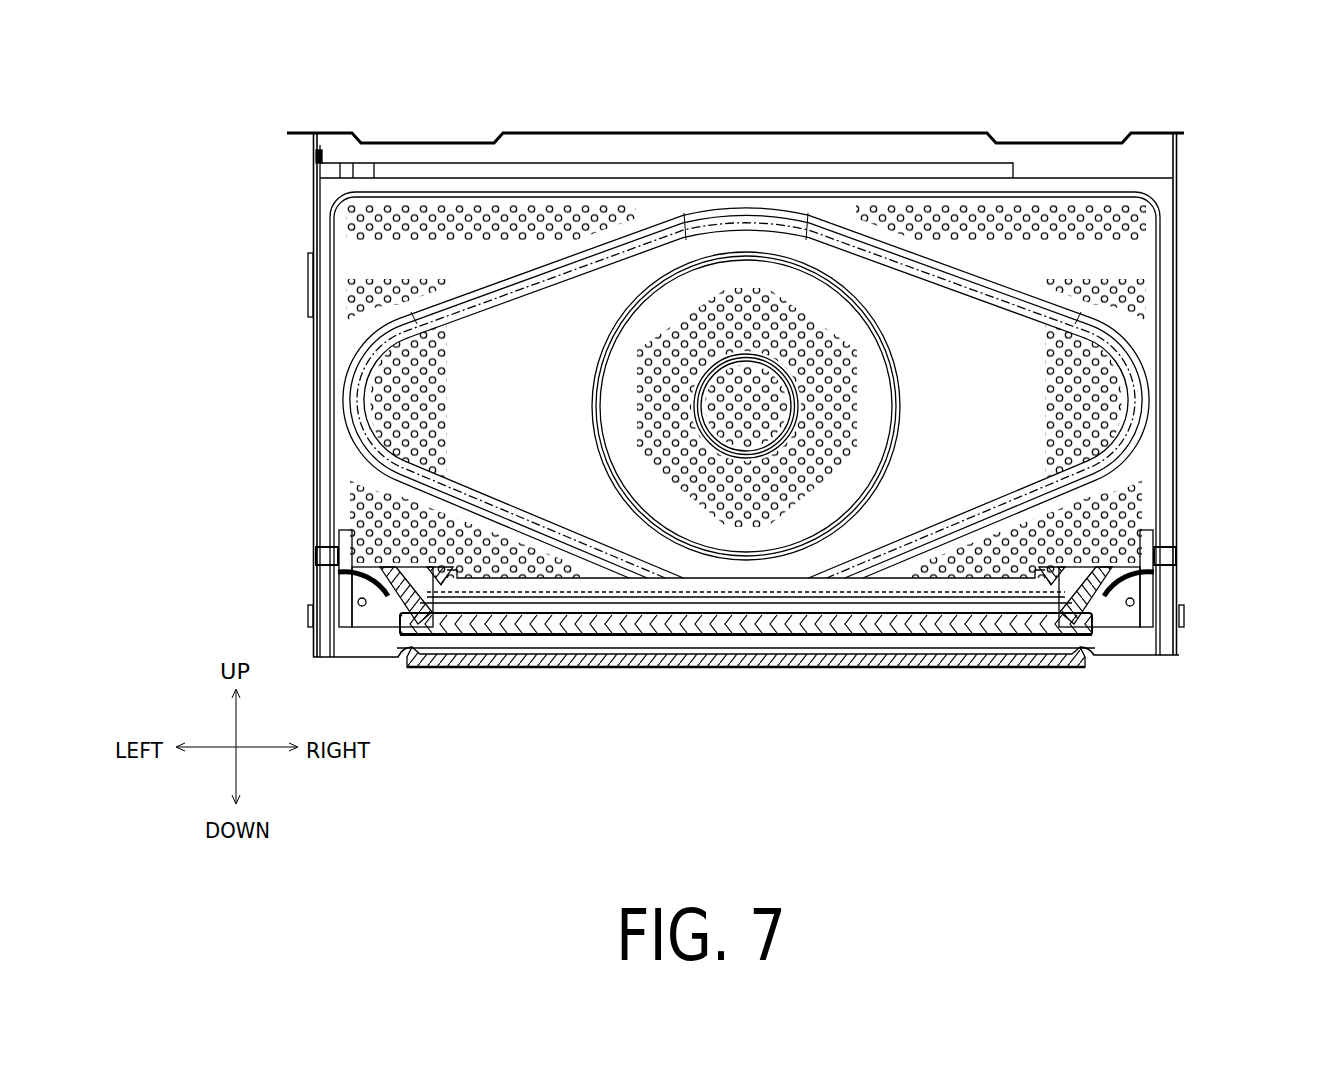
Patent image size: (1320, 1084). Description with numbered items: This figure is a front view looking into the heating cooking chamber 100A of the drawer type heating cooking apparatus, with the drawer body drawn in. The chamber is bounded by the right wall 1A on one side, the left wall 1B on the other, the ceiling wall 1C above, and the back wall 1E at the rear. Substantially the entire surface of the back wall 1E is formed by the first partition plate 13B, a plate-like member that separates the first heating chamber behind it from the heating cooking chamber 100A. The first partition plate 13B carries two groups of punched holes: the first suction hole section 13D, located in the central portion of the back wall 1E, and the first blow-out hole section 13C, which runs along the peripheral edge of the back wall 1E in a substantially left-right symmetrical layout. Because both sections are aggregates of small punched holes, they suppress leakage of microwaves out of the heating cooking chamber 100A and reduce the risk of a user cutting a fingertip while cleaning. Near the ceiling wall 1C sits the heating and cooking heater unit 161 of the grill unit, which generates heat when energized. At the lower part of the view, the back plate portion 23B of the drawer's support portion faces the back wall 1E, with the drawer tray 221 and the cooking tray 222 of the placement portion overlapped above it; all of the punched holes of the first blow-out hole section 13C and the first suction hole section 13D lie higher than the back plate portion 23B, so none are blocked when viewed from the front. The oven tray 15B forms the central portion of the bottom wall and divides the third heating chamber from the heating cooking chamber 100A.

The heating cooking chamber 100A is at (835, 128).
The heating and cooking heater unit 161 is at (484, 160).
The first blow-out hole section 13C is at (411, 208).
The first suction hole section 13D is at (773, 297).
The ceiling wall 1C is at (1125, 146).
The left wall 1B is at (314, 195).
The right wall 1A is at (1176, 197).
The back wall 1E is at (1137, 249).
The first partition plate 13B is at (803, 424).
The back plate portion 23B is at (764, 585).
The drawer tray 221 is at (608, 626).
The cooking tray 222 is at (854, 626).
The oven tray 15B is at (988, 664).